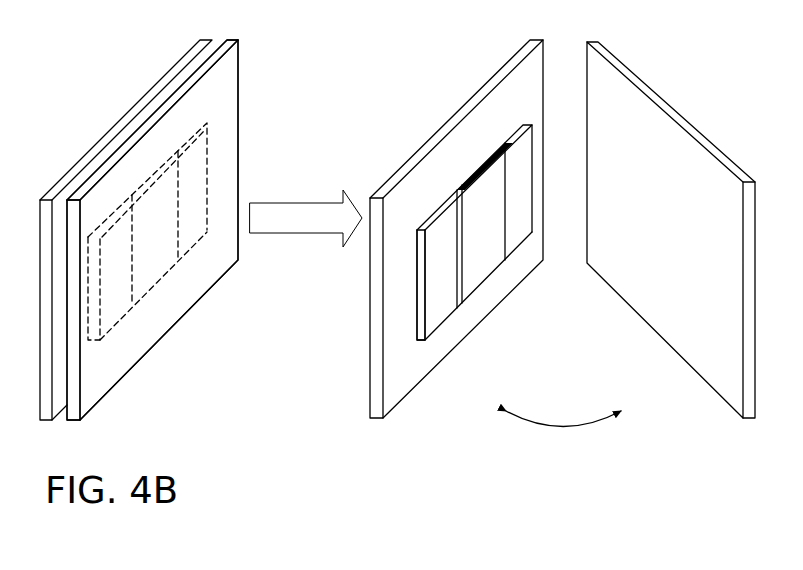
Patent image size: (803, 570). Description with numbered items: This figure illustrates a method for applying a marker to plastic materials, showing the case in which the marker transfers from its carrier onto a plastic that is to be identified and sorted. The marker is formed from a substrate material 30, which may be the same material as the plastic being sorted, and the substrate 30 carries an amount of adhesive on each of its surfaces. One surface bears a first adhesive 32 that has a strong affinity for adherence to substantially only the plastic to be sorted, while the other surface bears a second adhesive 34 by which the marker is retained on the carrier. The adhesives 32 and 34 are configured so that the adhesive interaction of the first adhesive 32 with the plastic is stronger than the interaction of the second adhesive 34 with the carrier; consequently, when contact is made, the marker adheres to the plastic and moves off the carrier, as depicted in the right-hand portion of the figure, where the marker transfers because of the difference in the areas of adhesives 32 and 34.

The substrate material 30 is at (426, 284).
The first adhesive 32 is at (413, 297).
The second adhesive 34 is at (472, 278).